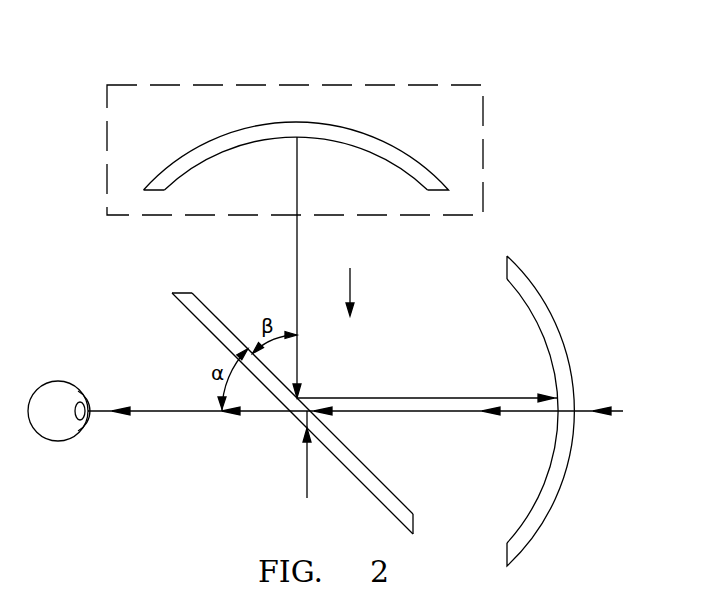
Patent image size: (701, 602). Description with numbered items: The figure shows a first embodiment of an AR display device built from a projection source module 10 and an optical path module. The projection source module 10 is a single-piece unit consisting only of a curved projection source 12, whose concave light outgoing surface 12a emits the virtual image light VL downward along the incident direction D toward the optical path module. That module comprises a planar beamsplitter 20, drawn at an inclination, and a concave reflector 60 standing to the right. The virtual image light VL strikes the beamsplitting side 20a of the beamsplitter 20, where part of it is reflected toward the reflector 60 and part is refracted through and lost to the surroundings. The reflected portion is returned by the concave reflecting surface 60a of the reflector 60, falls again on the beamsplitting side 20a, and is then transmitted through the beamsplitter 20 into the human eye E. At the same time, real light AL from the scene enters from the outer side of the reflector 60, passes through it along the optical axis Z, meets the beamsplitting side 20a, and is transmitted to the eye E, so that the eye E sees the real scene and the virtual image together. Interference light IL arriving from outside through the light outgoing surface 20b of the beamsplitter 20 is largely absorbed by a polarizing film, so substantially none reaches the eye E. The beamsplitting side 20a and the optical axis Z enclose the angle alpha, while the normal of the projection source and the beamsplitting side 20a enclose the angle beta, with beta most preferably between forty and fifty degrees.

The projection source module 10 is at (205, 85).
The projection source 12 is at (296, 143).
The light outgoing surface 12a is at (252, 142).
The beamsplitter 20 is at (269, 398).
The beamsplitting side 20a is at (247, 347).
The light outgoing surface 20b is at (291, 413).
The reflector 60 is at (515, 397).
The reflecting surface 60a is at (508, 281).
The human eye E is at (73, 386).
The virtual image light VL is at (310, 267).
The real light AL is at (456, 390).
The interference light IL is at (296, 454).
The optical axis Z is at (364, 410).
The incident direction D is at (352, 279).